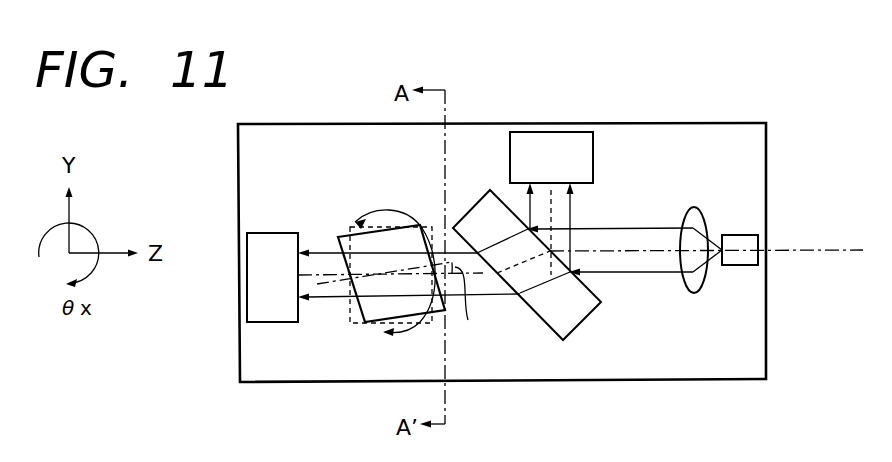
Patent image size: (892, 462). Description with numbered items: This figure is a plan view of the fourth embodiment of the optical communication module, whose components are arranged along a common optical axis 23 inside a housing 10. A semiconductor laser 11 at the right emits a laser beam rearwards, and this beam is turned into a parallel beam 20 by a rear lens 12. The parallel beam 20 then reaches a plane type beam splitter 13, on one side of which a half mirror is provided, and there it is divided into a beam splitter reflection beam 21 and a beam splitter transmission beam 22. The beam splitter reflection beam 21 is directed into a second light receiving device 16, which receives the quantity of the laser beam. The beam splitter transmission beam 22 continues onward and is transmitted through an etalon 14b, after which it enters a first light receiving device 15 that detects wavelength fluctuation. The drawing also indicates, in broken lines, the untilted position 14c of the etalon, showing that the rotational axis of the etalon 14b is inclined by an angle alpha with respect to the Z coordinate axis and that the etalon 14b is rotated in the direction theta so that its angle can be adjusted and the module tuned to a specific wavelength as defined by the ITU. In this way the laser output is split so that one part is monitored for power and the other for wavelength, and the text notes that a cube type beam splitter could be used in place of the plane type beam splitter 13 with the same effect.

The housing 10 is at (310, 350).
The semiconductor laser 11 is at (733, 235).
The rear lens 12 is at (693, 207).
The plane type beam splitter 13 is at (484, 196).
The etalon 14b is at (345, 238).
The transparent plate before tilting 14c is at (430, 226).
The first light receiving device 15 is at (277, 233).
The second light receiving device 16 is at (542, 132).
The parallel beam 20 is at (632, 273).
The beam splitter reflection beam 21 is at (572, 182).
The beam splitter transmission beam 22 is at (481, 296).
The optical axis 23 is at (633, 250).